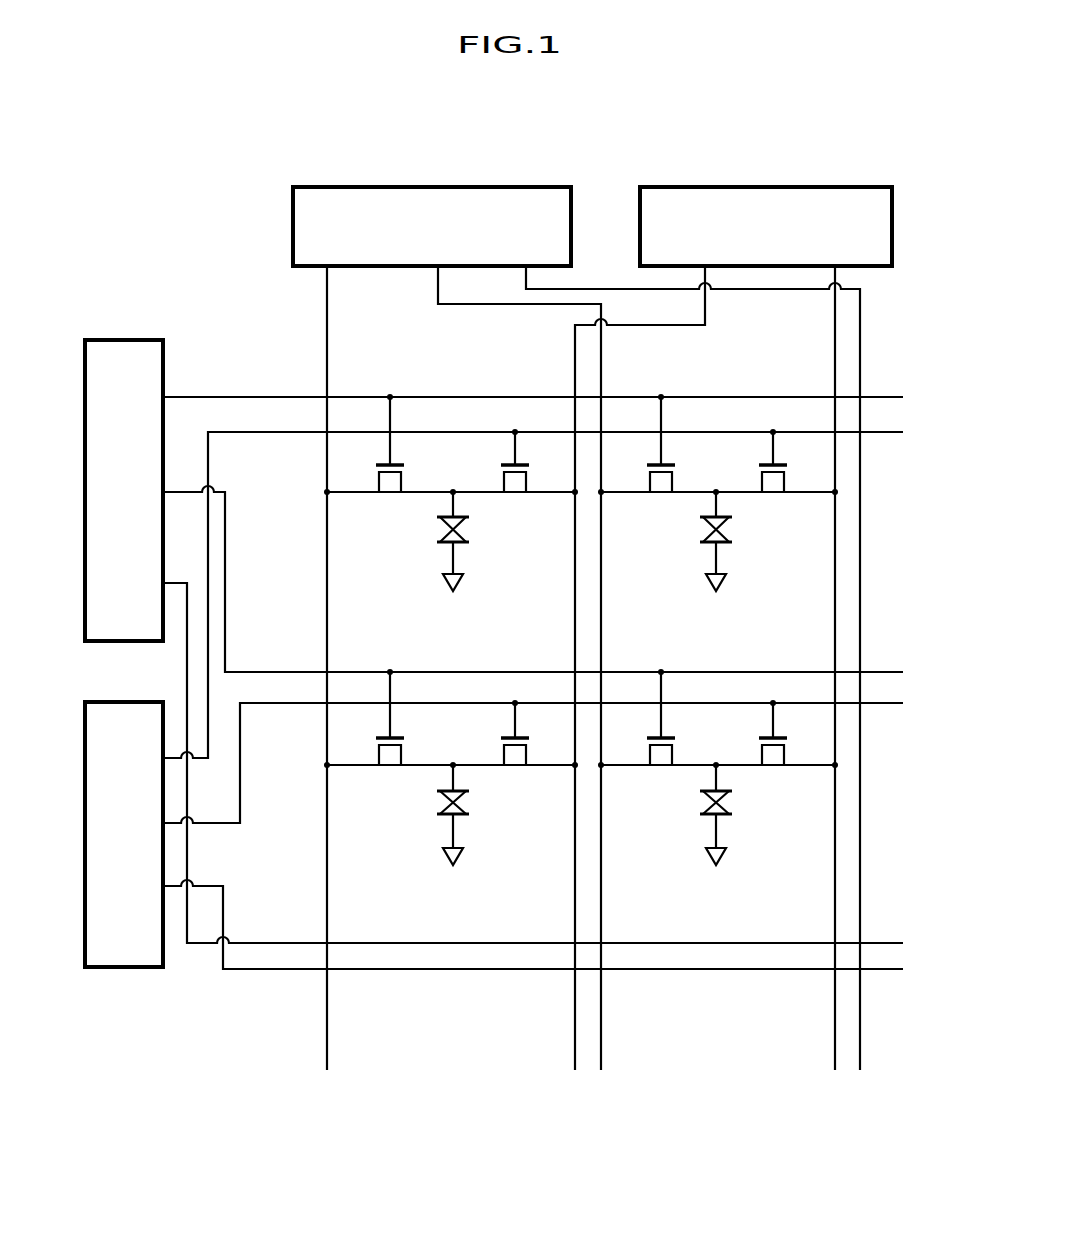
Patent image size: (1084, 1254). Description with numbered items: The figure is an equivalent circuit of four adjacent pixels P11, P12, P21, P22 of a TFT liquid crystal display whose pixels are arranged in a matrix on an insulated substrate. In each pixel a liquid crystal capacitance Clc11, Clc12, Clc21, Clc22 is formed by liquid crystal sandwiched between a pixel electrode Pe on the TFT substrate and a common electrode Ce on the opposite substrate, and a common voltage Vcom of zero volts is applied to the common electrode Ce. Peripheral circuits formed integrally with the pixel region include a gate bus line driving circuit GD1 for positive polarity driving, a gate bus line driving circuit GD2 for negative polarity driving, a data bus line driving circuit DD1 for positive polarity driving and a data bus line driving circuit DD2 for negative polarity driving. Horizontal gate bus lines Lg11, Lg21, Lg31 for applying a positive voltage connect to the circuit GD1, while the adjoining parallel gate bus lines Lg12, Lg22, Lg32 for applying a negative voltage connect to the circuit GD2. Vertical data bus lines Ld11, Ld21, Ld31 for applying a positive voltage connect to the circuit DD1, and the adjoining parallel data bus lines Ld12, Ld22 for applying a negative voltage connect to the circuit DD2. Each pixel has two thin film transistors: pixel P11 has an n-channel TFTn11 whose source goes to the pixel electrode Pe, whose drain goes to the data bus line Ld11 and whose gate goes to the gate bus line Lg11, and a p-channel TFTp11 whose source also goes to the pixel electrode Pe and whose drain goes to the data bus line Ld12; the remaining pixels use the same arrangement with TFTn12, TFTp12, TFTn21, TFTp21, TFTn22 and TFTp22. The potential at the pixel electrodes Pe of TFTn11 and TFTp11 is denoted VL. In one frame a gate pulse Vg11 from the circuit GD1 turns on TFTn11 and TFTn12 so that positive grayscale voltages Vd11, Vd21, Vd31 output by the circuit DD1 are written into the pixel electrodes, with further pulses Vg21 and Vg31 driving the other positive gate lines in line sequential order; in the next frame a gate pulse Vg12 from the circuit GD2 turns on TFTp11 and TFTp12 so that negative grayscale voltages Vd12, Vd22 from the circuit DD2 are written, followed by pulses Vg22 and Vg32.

The data bus line driving circuit for positive polarity driving DD1 is at (447, 187).
The data bus line driving circuit for negative polarity driving DD2 is at (779, 187).
The gate bus line driving circuit for positive polarity driving GD1 is at (118, 340).
The gate bus line driving circuit for negative polarity driving GD2 is at (118, 702).
The grayscale voltage Vd11 is at (335, 245).
The grayscale voltage Vd21 is at (445, 245).
The grayscale voltage Vd31 is at (535, 245).
The grayscale voltage Vd12 is at (710, 244).
The grayscale voltage Vd22 is at (835, 244).
The gate pulse for applying the positive voltage Vg11 is at (130, 399).
The gate pulse for applying the positive voltage Vg21 is at (130, 492).
The gate pulse for applying the positive voltage Vg31 is at (130, 584).
The gate pulse for applying the negative voltage Vg12 is at (130, 762).
The gate pulse for applying the negative voltage Vg22 is at (130, 824).
The gate pulse for applying the negative voltage Vg32 is at (130, 887).
The data bus line for applying a positive voltage Ld11 is at (330, 350).
The data bus line for applying a negative voltage Ld12 is at (573, 350).
The data bus line for applying a positive voltage Ld21 is at (604, 350).
The data bus line for applying a negative voltage Ld22 is at (832, 350).
The data bus line for applying a positive voltage Ld31 is at (863, 350).
The gate bus line for applying a positive voltage Lg11 is at (271, 390).
The gate bus line for applying a negative voltage Lg12 is at (274, 434).
The gate bus line for applying a positive voltage Lg21 is at (271, 667).
The gate bus line for applying a negative voltage Lg22 is at (274, 706).
The gate bus line for applying a positive voltage Lg31 is at (271, 938).
The gate bus line for applying a negative voltage Lg32 is at (274, 972).
The pixel P11 is at (388, 633).
The pixel P12 is at (659, 633).
The pixel P21 is at (390, 910).
The pixel P22 is at (661, 910).
The n-channel TFT TFTn11 is at (378, 456).
The p-channel TFT TFTp11 is at (514, 475).
The n-channel TFT TFTn12 is at (649, 457).
The p-channel TFT TFTp12 is at (777, 475).
The n-channel TFT TFTn21 is at (382, 733).
The p-channel TFT TFTp21 is at (514, 748).
The n-channel TFT TFTn22 is at (649, 733).
The p-channel TFT TFTp22 is at (777, 748).
The liquid crystal capacitance Clc11 is at (463, 553).
The liquid crystal capacitance Clc12 is at (752, 524).
The liquid crystal capacitance Clc21 is at (490, 800).
The liquid crystal capacitance Clc22 is at (752, 798).
The potential at the pixel electrodes VL is at (451, 491).
The pixel electrode Pe is at (437, 517).
The common electrode Ce is at (439, 542).
The common voltage Vcom is at (594, 734).